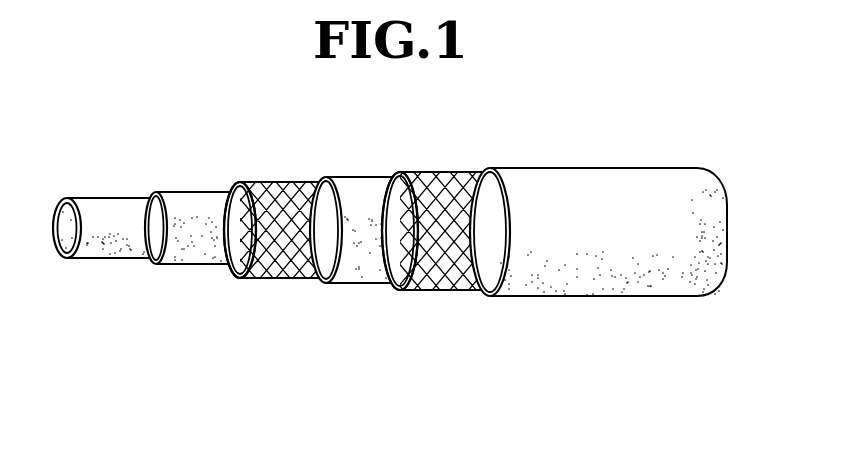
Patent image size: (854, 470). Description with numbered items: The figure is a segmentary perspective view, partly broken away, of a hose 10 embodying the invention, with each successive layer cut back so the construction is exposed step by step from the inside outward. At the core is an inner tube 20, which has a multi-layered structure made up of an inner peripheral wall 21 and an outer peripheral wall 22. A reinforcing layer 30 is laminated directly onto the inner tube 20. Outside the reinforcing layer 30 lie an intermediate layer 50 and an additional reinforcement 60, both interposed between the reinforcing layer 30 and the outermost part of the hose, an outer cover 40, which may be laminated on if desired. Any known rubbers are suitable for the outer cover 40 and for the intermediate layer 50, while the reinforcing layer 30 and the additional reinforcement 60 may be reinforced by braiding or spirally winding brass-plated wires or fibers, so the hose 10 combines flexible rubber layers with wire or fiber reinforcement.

The hose 10 is at (390, 231).
The inner tube 20 is at (146, 181).
The inner peripheral wall 21 is at (107, 205).
The outer peripheral wall 22 is at (192, 205).
The reinforcing layer 30 is at (277, 192).
The outer cover 40 is at (561, 174).
The intermediate layer 50 is at (352, 195).
The additional reinforcement 60 is at (436, 185).